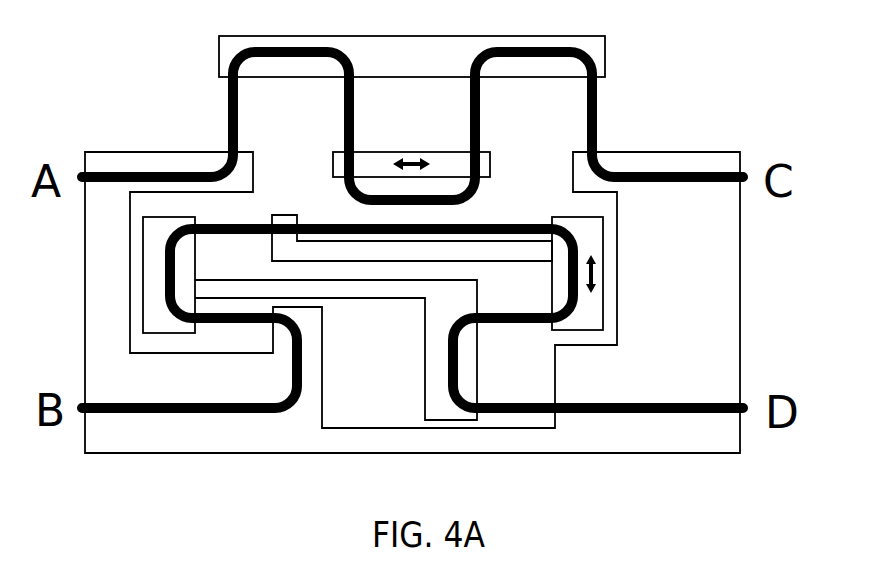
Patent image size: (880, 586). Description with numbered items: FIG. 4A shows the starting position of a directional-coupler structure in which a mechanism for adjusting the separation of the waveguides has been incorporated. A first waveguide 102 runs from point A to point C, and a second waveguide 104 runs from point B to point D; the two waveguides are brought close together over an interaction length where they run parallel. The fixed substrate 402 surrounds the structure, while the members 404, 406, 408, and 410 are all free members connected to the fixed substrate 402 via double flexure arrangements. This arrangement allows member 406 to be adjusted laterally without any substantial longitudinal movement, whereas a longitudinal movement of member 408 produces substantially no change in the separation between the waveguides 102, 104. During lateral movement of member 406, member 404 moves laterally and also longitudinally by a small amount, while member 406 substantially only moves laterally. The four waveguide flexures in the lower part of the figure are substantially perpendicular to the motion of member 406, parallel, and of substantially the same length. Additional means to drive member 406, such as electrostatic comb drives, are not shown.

The first waveguide 102 is at (124, 168).
The second waveguide 104 is at (173, 415).
The fixed substrate 402 is at (702, 305).
The free member 404 is at (363, 293).
The free member 406 is at (568, 215).
The free member 408 is at (421, 153).
The free member 410 is at (432, 65).